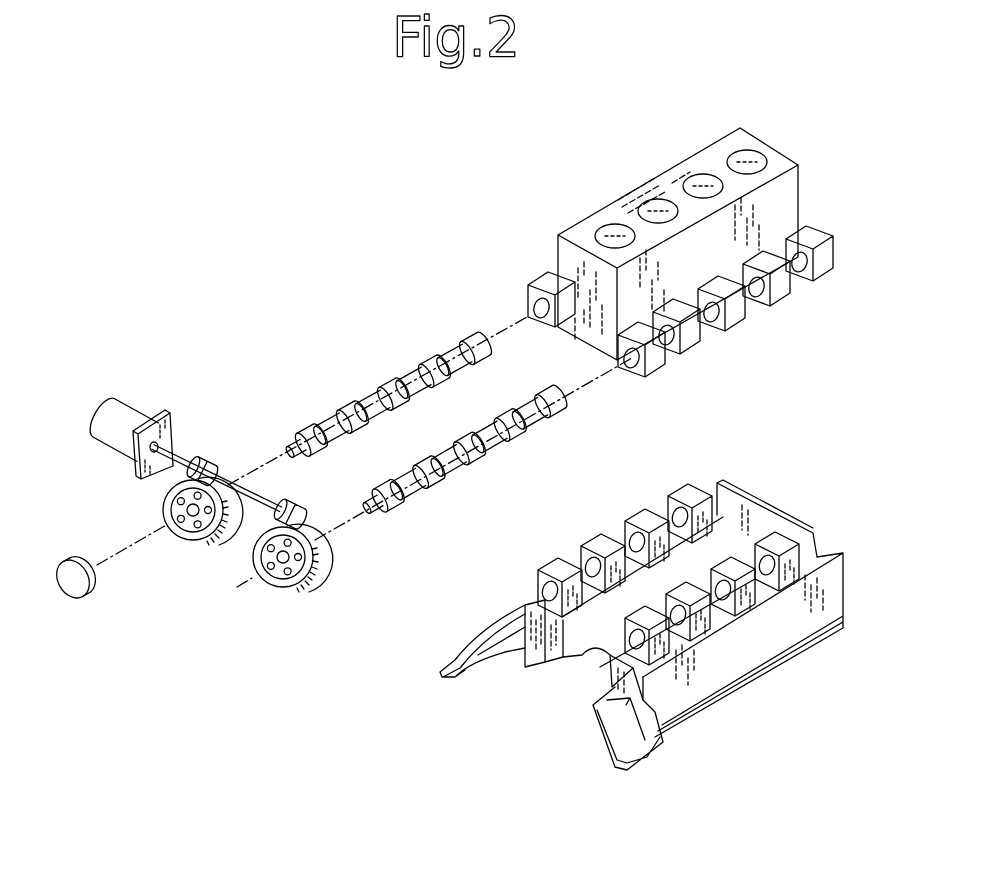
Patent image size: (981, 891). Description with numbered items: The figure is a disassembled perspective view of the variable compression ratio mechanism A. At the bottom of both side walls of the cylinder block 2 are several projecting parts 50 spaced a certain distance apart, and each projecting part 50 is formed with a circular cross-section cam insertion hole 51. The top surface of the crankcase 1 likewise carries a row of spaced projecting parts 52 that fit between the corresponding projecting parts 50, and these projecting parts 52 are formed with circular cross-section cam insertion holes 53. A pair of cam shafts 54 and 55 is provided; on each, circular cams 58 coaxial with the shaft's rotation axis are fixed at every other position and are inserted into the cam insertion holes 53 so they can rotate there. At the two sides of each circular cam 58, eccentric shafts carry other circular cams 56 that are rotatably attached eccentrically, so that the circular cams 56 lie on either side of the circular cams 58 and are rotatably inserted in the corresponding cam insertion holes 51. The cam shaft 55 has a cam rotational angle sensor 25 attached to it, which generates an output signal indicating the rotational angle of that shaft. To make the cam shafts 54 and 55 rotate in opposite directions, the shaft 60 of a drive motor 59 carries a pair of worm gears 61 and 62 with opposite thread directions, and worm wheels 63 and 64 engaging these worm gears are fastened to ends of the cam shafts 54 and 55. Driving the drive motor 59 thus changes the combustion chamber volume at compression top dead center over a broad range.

The variable compression ratio mechanism A is at (545, 210).
The crankcase 1 is at (693, 682).
The cylinder block 2 is at (797, 200).
The cam rotational angle sensor 25 is at (73, 555).
The projecting part 50 is at (547, 287).
The cam insertion hole 51 is at (528, 300).
The projecting part 52 is at (690, 493).
The cam insertion hole 53 is at (590, 567).
The cam shaft 54 is at (503, 410).
The cam shaft 55 is at (387, 421).
The circular cam 56 is at (312, 425).
The circular cam 58 is at (332, 415).
The drive motor 59 is at (108, 408).
The drive shaft 60 is at (253, 503).
The worm gear 61 is at (293, 510).
The worm gear 62 is at (205, 460).
The worm wheel 63 is at (287, 583).
The worm wheel 64 is at (180, 520).